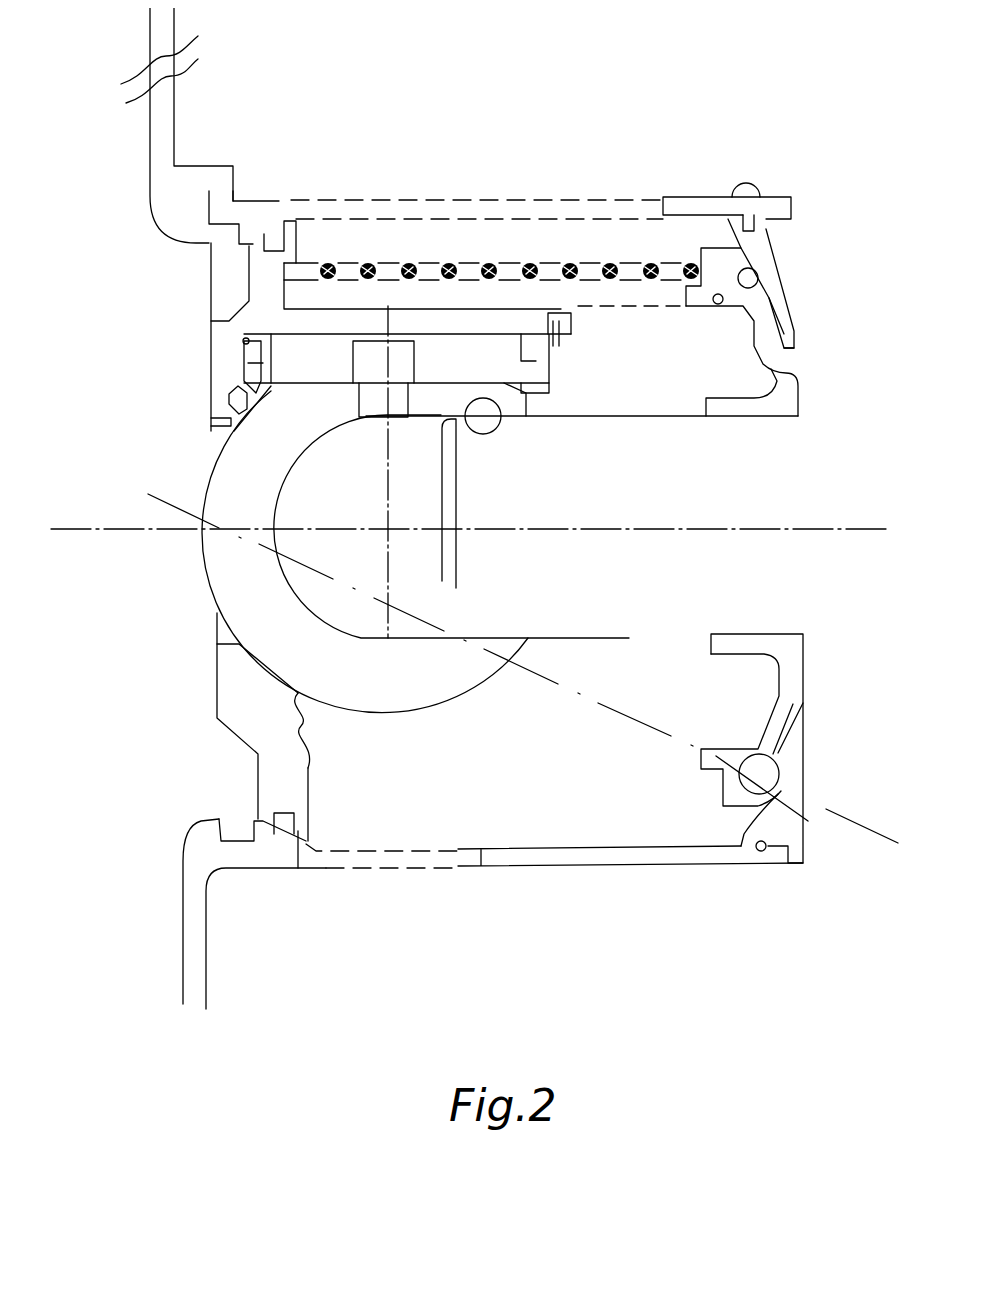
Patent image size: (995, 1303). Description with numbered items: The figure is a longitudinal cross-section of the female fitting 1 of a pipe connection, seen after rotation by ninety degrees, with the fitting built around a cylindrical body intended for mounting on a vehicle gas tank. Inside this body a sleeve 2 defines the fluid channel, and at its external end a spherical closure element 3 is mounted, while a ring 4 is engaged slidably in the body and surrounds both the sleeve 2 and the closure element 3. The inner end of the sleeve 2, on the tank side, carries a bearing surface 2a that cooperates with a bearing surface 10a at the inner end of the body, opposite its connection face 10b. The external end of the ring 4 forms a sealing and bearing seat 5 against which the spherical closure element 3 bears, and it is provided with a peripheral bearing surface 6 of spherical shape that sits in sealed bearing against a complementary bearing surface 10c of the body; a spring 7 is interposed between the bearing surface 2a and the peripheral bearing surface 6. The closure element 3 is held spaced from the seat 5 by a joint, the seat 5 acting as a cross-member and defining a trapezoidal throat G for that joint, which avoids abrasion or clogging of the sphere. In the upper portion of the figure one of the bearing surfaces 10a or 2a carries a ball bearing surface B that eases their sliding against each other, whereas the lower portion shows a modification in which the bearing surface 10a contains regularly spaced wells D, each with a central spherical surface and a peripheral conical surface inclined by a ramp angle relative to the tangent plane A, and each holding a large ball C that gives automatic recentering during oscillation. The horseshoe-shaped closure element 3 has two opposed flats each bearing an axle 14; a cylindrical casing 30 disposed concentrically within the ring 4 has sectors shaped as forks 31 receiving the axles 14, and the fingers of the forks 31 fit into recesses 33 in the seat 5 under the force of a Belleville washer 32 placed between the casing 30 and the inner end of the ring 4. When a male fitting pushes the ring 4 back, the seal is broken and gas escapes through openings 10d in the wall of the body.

The female fitting 1 is at (478, 945).
The sleeve 2 is at (747, 407).
The bearing surface of the sleeve 2a is at (787, 378).
The spherical closure element 3 is at (252, 598).
The ring 4 is at (457, 320).
The sealing and bearing seat 5 is at (247, 702).
The peripheral bearing surface 6 is at (295, 218).
The spring 7 is at (400, 260).
The bearing surface of the cylindrical body 10a is at (778, 300).
The connection face 10b is at (190, 917).
The complementary bearing surface 10c is at (273, 205).
The openings 10d is at (578, 203).
The axle 14 is at (363, 397).
The cylindrical casing 30 is at (525, 353).
The forks 31 is at (300, 363).
The Belleville washer 32 is at (547, 320).
The recesses 33 is at (262, 362).
The tangent plane A is at (800, 700).
The ball bearing surface B is at (757, 268).
The ball C is at (757, 785).
The well D is at (805, 820).
The trapezoidal throat G is at (230, 400).